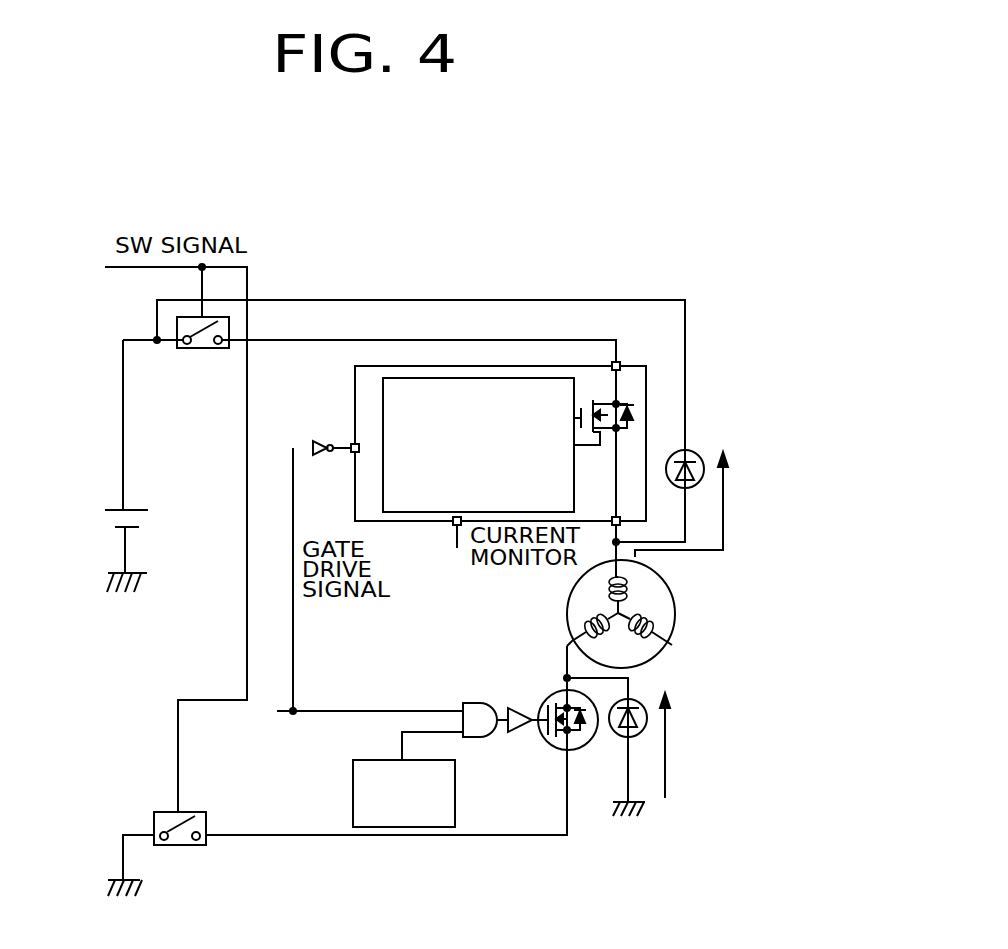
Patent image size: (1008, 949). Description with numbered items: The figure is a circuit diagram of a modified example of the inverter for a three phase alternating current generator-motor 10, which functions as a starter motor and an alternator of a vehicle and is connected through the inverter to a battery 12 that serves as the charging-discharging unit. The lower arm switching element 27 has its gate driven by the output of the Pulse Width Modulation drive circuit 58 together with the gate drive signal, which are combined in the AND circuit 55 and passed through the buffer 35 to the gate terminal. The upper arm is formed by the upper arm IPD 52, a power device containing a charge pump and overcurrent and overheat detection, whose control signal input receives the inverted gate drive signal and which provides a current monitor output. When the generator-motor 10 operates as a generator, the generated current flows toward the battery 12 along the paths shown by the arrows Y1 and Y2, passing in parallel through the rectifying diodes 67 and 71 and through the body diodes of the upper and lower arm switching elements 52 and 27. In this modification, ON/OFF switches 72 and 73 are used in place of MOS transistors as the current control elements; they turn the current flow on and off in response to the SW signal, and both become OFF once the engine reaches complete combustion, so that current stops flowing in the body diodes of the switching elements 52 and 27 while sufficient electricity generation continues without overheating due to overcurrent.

The three phase alternating current generator-motor 10 is at (573, 583).
The battery 12 is at (116, 508).
The lower arm switching element 27 is at (547, 750).
The buffer 35 is at (510, 712).
The upper arm IPD 52 is at (353, 403).
The AND circuit 55 is at (460, 702).
The Pulse Width Modulation (PWM) drive circuit 58 is at (353, 796).
The rectifying diode 67 is at (698, 452).
The rectifying diode 71 is at (622, 740).
The ON/OFF switch 72 is at (202, 350).
The ON/OFF switch 73 is at (163, 812).
The arrow Y1 is at (667, 750).
The arrow Y2 is at (720, 553).